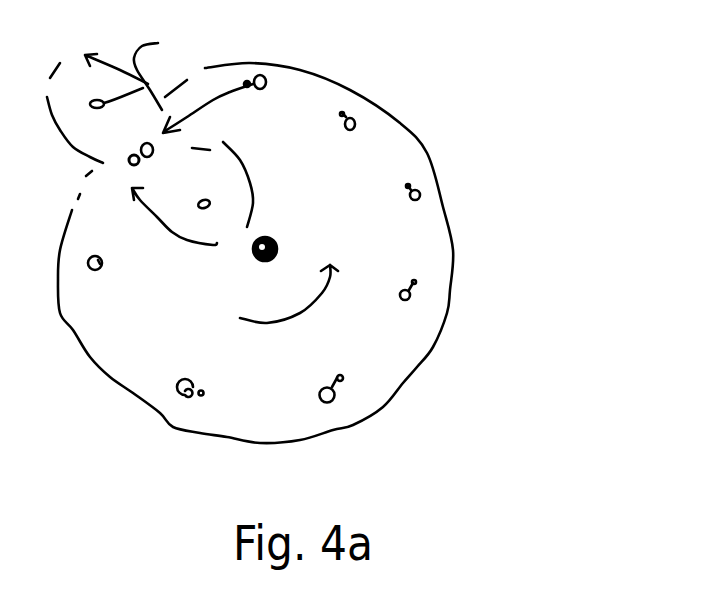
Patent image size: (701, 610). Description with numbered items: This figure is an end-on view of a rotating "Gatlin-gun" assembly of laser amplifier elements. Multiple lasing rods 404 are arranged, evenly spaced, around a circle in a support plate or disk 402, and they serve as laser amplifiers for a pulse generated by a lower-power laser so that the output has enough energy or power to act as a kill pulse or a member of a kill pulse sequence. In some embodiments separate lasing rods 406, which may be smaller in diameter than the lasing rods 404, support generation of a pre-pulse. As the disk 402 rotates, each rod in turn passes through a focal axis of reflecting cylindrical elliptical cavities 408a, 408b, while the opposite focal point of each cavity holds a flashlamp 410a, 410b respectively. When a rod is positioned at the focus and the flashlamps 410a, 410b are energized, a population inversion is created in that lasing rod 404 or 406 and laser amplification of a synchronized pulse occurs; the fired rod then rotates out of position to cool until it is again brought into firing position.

The support plate or disk 402 is at (432, 353).
The lasing rods 404 is at (352, 122).
The separate lasing rods 406 is at (336, 110).
The reflecting cylindrical elliptical cavity 408a is at (247, 180).
The reflecting cylindrical elliptical cavity 408b is at (195, 65).
The flashlamp 410a is at (205, 195).
The flashlamp 410b is at (155, 81).